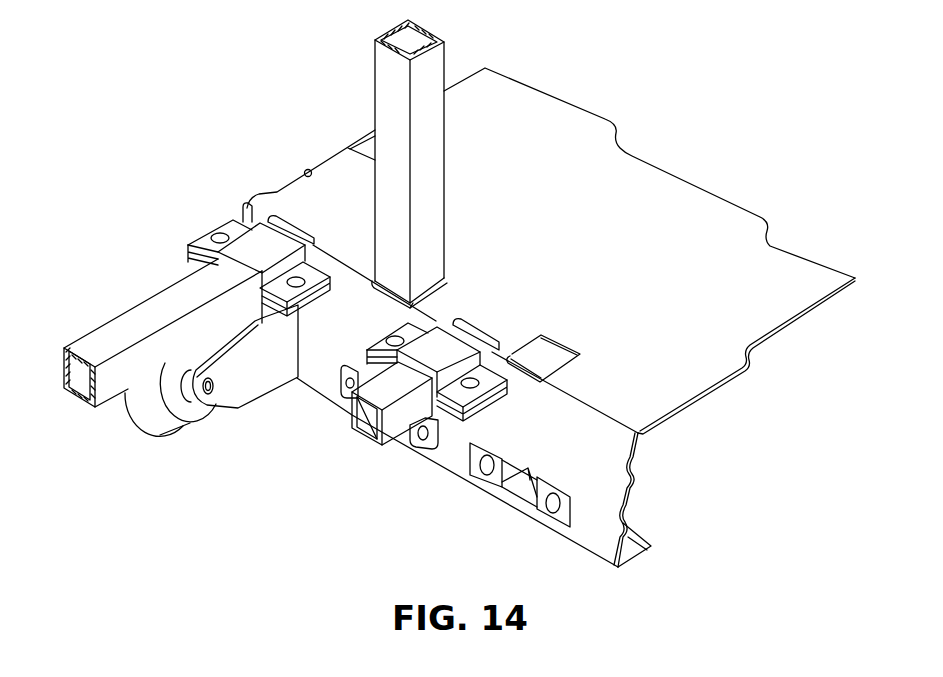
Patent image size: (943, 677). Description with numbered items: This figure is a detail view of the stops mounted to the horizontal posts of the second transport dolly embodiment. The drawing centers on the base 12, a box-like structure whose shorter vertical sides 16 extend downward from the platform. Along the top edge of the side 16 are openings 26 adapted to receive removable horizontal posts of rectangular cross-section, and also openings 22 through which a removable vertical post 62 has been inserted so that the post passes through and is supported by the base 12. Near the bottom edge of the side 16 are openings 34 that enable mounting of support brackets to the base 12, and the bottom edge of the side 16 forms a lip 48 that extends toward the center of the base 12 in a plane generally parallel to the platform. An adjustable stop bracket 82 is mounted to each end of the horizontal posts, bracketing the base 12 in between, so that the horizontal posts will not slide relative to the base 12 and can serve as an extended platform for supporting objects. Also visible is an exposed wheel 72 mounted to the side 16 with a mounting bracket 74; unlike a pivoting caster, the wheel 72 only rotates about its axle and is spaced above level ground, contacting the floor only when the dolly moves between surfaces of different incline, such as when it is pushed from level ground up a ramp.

The base 12 is at (697, 171).
The sides 16 is at (603, 445).
The openings 22 is at (428, 273).
The openings 26 is at (296, 222).
The openings 34 is at (530, 480).
The lips 48 is at (642, 537).
The removable vertical posts 62 is at (388, 105).
The exposed wheels 72 is at (197, 420).
The mounting brackets 74 is at (112, 333).
The adjustable stop bracket 82 is at (258, 252).